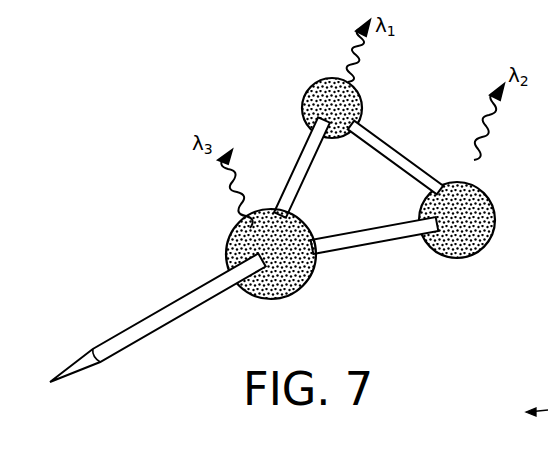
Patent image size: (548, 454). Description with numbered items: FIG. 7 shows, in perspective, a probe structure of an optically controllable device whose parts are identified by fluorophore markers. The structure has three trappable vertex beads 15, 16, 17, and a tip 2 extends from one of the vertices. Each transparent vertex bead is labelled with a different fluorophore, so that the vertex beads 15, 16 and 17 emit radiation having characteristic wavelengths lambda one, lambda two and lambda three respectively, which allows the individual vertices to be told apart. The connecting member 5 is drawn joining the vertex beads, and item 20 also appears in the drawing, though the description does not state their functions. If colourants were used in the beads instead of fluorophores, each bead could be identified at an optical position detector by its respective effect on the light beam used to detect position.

The tip 2 is at (150, 322).
The connecting rod 5 is at (362, 245).
The trappable vertex bead 15 is at (318, 86).
The trappable vertex bead 16 is at (480, 252).
The trappable vertex bead 17 is at (305, 283).
The substrate 20 is at (547, 444).